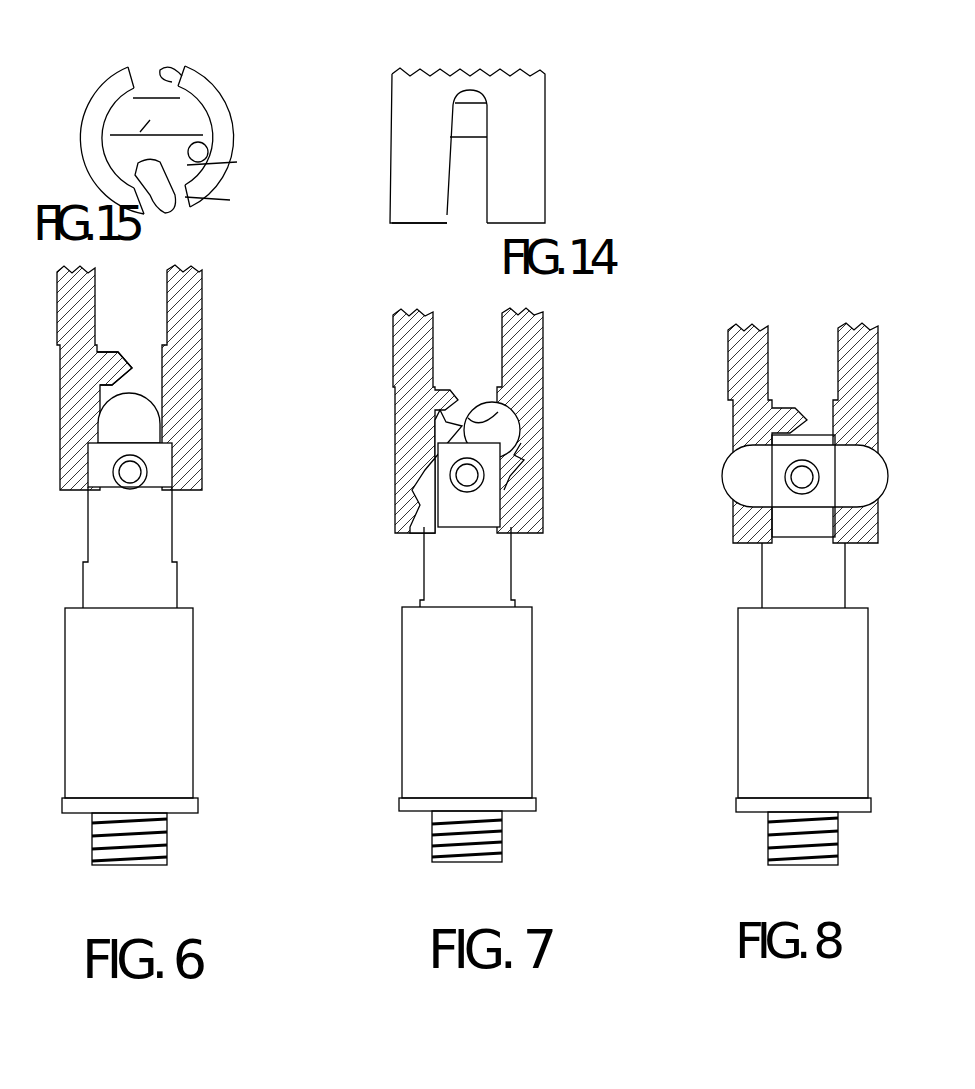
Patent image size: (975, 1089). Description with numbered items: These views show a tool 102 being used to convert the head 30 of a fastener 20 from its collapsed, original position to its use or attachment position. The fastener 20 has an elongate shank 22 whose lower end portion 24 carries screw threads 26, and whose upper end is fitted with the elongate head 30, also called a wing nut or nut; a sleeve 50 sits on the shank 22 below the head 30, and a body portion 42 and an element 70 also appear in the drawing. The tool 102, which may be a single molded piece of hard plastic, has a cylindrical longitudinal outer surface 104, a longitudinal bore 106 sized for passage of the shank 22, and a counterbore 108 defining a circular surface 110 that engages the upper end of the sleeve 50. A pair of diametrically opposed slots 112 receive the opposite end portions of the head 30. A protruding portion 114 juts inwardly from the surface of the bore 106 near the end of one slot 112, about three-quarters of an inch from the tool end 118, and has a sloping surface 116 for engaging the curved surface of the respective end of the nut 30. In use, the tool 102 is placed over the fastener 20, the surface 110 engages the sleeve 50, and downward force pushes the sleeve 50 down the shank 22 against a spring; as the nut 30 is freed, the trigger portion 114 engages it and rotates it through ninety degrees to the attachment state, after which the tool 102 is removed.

In FIG. 6, the fastener 20 is at (201, 529).
In FIG. 7, the fastener 20 is at (546, 557).
In FIG. 8, the fastener 20 is at (719, 551).
In FIG. 6, the shank 22 is at (205, 453).
In FIG. 7, the shank 22 is at (492, 502).
In FIG. 8, the shank 22 is at (738, 518).
In FIG. 6, the lower end portion 24 is at (129, 839).
In FIG. 8, the lower end portion 24 is at (770, 845).
In FIG. 7, the screw threads 26 is at (470, 864).
In FIG. 6, the head 30 is at (200, 419).
In FIG. 7, the head 30 is at (492, 430).
In FIG. 8, the head 30 is at (805, 476).
In FIG. 6, the body 42 is at (190, 697).
In FIG. 7, the body 42 is at (512, 690).
In FIG. 8, the body 42 is at (744, 748).
In FIG. 6, the sleeve 50 is at (178, 576).
In FIG. 7, the sleeve 50 is at (512, 594).
In FIG. 8, the sleeve 50 is at (760, 588).
In FIG. 7, the retaining ring fragment 70 is at (402, 520).
In FIG. 15, the tool 102 is at (251, 106).
In FIG. 14, the tool 102 is at (571, 95).
In FIG. 6, the tool 102 is at (205, 273).
In FIG. 7, the tool 102 is at (545, 426).
In FIG. 8, the tool 102 is at (733, 342).
In FIG. 15, the cylindrical longitudinal outer surface 104 is at (88, 112).
In FIG. 15, the longitudinal bore 106 is at (212, 158).
In FIG. 6, the longitudinal bore 106 is at (200, 368).
In FIG. 15, the counterbore 108 is at (232, 201).
In FIG. 6, the counterbore 108 is at (200, 471).
In FIG. 15, the circular surface 110 is at (222, 166).
In FIG. 6, the circular surface 110 is at (200, 429).
In FIG. 15, the slots 112 is at (182, 72).
In FIG. 14, the slots 112 is at (486, 180).
In FIG. 6, the protruding portion 114 is at (130, 352).
In FIG. 15, the sloping surface 116 is at (112, 155).
In FIG. 14, the sloping surface 116 is at (480, 120).
In FIG. 7, the sloping surface 116 is at (543, 378).
In FIG. 14, the tool end 118 is at (415, 224).